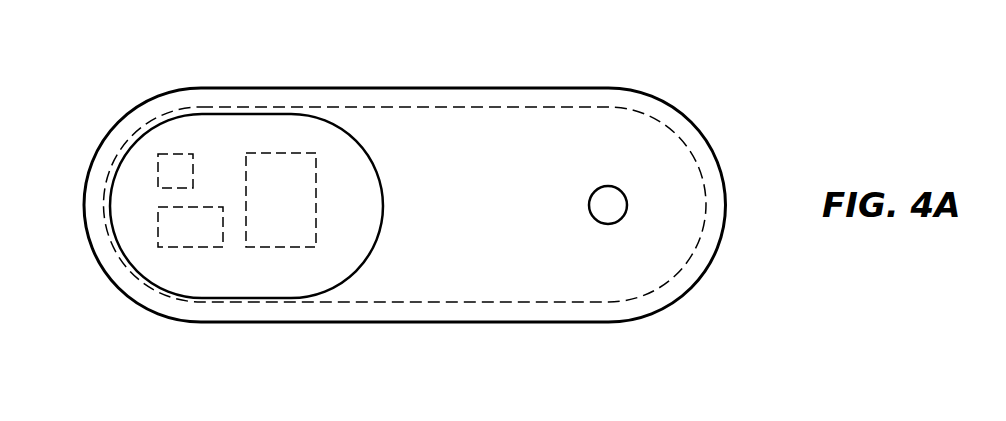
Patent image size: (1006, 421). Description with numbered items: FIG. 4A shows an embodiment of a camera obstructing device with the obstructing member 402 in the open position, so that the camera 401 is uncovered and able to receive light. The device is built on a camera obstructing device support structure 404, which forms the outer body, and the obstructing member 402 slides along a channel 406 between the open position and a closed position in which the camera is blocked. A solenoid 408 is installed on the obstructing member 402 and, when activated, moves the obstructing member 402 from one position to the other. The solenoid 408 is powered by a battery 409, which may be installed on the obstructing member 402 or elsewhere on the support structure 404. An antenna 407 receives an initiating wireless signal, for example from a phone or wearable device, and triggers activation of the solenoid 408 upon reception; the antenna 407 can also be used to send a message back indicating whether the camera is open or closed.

The camera 401 is at (607, 187).
The obstructing member 402 is at (246, 115).
The camera obstructing device support structure 404 is at (380, 88).
The channel 406 is at (537, 301).
The antenna 407 is at (175, 154).
The solenoid 408 is at (188, 247).
The battery 409 is at (278, 247).